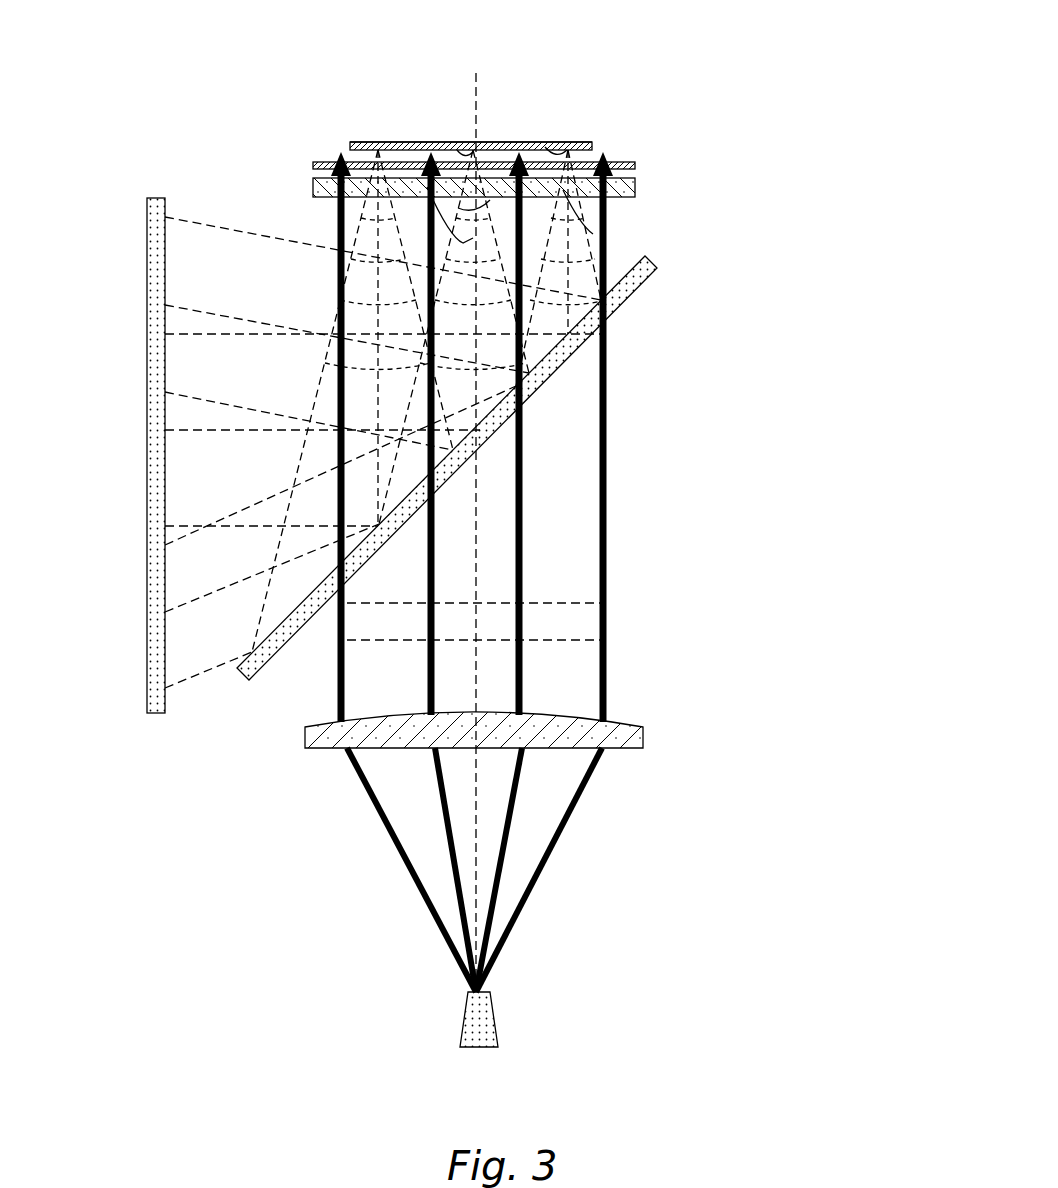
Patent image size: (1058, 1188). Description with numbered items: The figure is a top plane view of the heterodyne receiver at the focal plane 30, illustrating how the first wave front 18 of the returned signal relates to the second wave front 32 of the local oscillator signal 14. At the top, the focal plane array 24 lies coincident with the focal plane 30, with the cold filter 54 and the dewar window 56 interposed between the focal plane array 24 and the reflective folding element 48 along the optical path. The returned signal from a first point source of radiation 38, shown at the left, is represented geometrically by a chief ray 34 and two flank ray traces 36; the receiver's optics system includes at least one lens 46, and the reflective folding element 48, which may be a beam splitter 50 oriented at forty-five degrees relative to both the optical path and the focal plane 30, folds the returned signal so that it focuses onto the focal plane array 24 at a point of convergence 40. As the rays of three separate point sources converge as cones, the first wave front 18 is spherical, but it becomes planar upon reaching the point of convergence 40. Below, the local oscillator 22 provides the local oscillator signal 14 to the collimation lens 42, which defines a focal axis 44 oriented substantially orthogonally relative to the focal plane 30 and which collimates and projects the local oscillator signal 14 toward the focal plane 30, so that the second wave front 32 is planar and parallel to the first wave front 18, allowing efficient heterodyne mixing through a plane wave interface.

The local oscillator signal 14 is at (580, 806).
The first wave front 18 is at (368, 308).
The local oscillator 22 is at (493, 1012).
The focal plane array 24 is at (590, 141).
The focal plane 30 is at (563, 147).
The second wave front 32 is at (575, 640).
The chief ray 34 is at (427, 187).
The flank ray traces 36 is at (497, 212).
The first point source of radiation 38 is at (222, 312).
The point of convergence 40 is at (457, 150).
The collimation lens 42 is at (643, 723).
The focal axis 44 is at (477, 793).
The lens 46 is at (155, 713).
The reflective folding element 48 is at (637, 296).
The beam splitter 50 is at (447, 468).
The cold filter 54 is at (635, 162).
The dewar window 56 is at (635, 185).